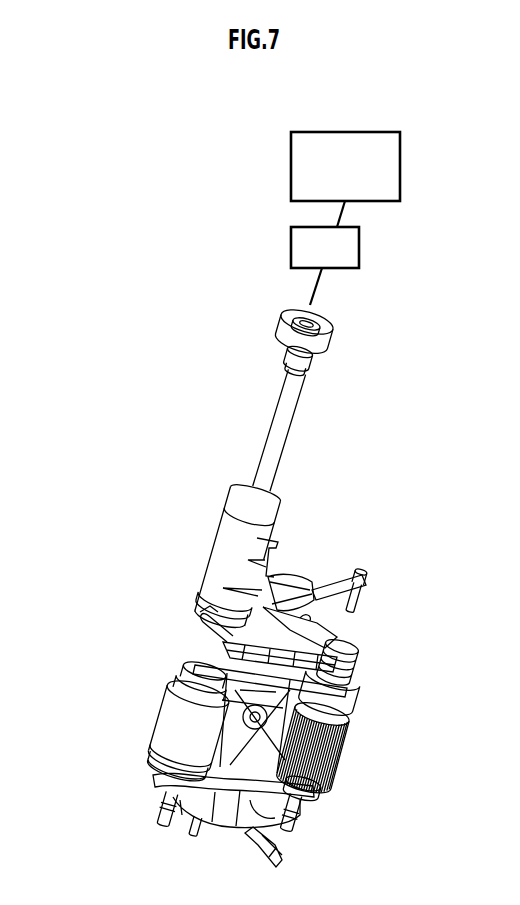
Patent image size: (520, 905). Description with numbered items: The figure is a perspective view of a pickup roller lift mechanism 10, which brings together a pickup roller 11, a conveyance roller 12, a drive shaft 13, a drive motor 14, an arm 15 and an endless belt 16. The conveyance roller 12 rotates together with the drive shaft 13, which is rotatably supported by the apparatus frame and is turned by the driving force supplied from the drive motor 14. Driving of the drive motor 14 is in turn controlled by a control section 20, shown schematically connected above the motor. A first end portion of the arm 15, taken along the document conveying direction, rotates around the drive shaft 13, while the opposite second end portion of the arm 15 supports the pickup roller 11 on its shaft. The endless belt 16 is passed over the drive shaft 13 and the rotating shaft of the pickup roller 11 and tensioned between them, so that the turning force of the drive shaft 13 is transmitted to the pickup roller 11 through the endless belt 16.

The pickup roller lift mechanism 10 is at (98, 400).
The pickup roller 11 is at (342, 758).
The conveyance roller 12 is at (173, 727).
The drive shaft 13 is at (276, 418).
The drive motor 14 is at (359, 243).
The arm 15 is at (202, 646).
The endless belt 16 is at (343, 650).
The control section 20 is at (400, 170).